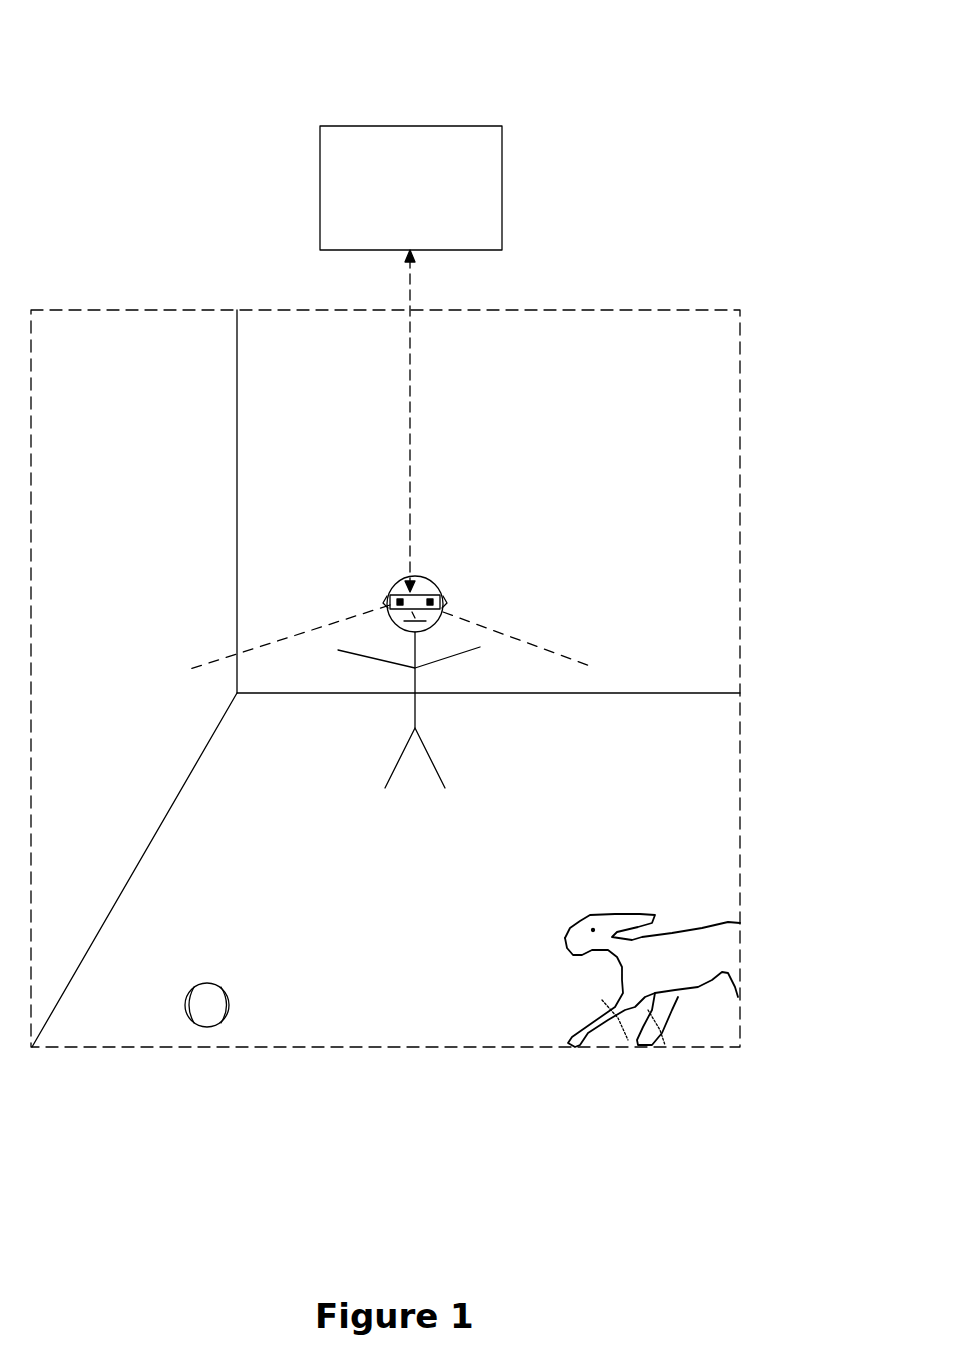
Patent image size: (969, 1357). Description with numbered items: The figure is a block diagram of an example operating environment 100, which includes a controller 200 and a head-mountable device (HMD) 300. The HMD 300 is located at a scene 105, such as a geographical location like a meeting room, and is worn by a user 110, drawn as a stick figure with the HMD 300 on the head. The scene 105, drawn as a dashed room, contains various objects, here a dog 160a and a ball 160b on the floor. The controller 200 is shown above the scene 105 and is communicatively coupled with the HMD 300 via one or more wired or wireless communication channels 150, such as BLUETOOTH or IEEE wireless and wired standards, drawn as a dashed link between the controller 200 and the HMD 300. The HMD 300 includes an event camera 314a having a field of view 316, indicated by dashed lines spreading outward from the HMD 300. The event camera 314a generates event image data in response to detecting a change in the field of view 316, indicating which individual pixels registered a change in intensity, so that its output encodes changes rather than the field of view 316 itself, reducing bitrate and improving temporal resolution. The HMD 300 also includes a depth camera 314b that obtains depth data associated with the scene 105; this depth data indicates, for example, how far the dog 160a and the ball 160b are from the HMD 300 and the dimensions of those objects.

The operating environment 100 is at (150, 40).
The scene 105 is at (385, 678).
The user 110 is at (393, 778).
The communication channels 150 is at (411, 402).
The dog 160a is at (722, 915).
The ball 160b is at (185, 1012).
The controller 200 is at (411, 188).
The head-mountable device 300 is at (418, 588).
The event camera 314a is at (394, 597).
The depth camera 314b is at (437, 597).
The field of view 316 is at (524, 665).